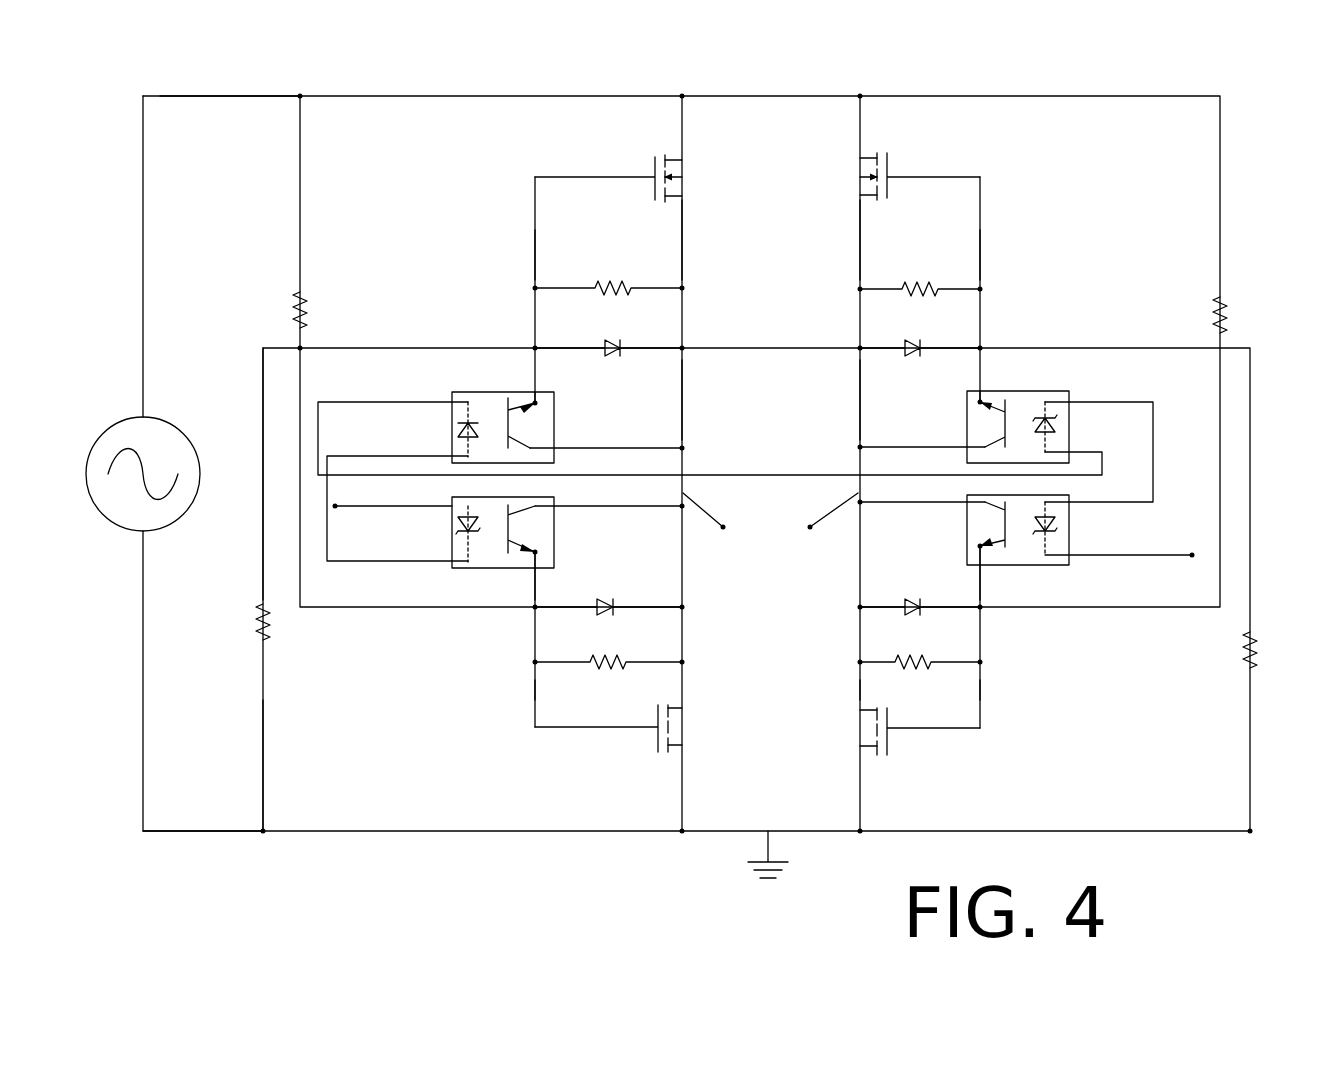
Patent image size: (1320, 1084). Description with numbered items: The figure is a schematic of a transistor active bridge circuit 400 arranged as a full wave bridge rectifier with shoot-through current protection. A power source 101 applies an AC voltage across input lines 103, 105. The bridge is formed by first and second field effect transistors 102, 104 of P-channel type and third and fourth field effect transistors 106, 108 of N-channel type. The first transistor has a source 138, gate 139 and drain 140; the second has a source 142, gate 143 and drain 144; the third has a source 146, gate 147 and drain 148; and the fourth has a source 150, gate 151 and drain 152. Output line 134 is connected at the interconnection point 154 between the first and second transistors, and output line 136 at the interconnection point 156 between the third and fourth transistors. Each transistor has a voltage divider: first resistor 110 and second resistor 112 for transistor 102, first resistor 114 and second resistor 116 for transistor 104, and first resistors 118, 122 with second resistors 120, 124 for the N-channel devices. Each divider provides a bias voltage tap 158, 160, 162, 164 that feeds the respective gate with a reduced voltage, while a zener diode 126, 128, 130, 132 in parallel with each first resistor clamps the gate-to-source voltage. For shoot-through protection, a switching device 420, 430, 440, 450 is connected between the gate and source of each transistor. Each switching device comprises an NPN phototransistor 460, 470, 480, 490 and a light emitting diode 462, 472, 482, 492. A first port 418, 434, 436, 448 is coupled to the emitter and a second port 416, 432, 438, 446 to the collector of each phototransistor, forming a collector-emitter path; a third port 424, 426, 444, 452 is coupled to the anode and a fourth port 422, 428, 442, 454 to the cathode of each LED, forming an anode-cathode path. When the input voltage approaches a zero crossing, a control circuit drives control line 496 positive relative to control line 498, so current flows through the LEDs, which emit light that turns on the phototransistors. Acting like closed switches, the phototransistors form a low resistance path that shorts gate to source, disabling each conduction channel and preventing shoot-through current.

The power source 101 is at (118, 418).
The input line 103 is at (190, 97).
The input line 105 is at (162, 830).
The transistor active bridge circuit 400 is at (222, 381).
The second resistor 116 is at (299, 304).
The second resistor 112 is at (262, 612).
The second resistor 124 is at (1220, 300).
The second resistor 120 is at (1257, 650).
The first field effect transistor 102 is at (630, 160).
The drain 140 is at (684, 160).
The gate 139 is at (632, 178).
The drain 144 is at (684, 750).
The source 138 is at (684, 225).
The bias voltage tap 158 is at (522, 290).
The first resistor 110 is at (603, 287).
The zener diode 126 is at (608, 345).
The third field effect transistor 106 is at (960, 155).
The drain 148 is at (859, 159).
The gate 147 is at (908, 178).
The drain 152 is at (860, 750).
The source 146 is at (859, 240).
The bias voltage tap 162 is at (992, 282).
The first resistor 118 is at (932, 290).
The zener diode 130 is at (922, 348).
The second field effect transistor 104 is at (600, 752).
The source 142 is at (684, 708).
The gate 143 is at (648, 735).
The bias voltage tap 160 is at (522, 672).
The first resistor 114 is at (594, 662).
The zener diode 128 is at (597, 608).
The fourth field effect transistor 108 is at (845, 736).
The source 150 is at (859, 680).
The gate 151 is at (906, 732).
The bias voltage tap 164 is at (1000, 662).
The first resistor 122 is at (920, 661).
The zener diode 132 is at (925, 605).
The interconnection point 154 is at (700, 420).
The interconnection point 156 is at (848, 420).
The output line 134 is at (720, 530).
The output line 136 is at (815, 530).
The switching device 420 is at (560, 408).
The NPN phototransistor 460 is at (528, 398).
The first port 418 is at (547, 388).
The second port 416 is at (570, 448).
The fourth port 422 is at (445, 401).
The light emitting diode 462 is at (455, 437).
The third port 424 is at (455, 456).
The switching device 430 is at (560, 540).
The NPN phototransistor 470 is at (500, 548).
The second port 432 is at (566, 506).
The third port 426 is at (445, 506).
The control line 496 is at (370, 510).
The light emitting diode 472 is at (456, 535).
The fourth port 428 is at (456, 560).
The first port 434 is at (545, 562).
The switching device 440 is at (960, 415).
The NPN phototransistor 480 is at (1026, 400).
The first port 436 is at (978, 400).
The second port 438 is at (958, 446).
The fourth port 442 is at (1080, 402).
The light emitting diode 482 is at (1060, 430).
The third port 444 is at (1080, 454).
The switching device 450 is at (958, 535).
The NPN phototransistor 490 is at (1012, 544).
The second port 446 is at (962, 504).
The third port 452 is at (1078, 503).
The light emitting diode 492 is at (1060, 521).
The fourth port 454 is at (1082, 555).
The control line 498 is at (1152, 555).
The first port 448 is at (984, 570).